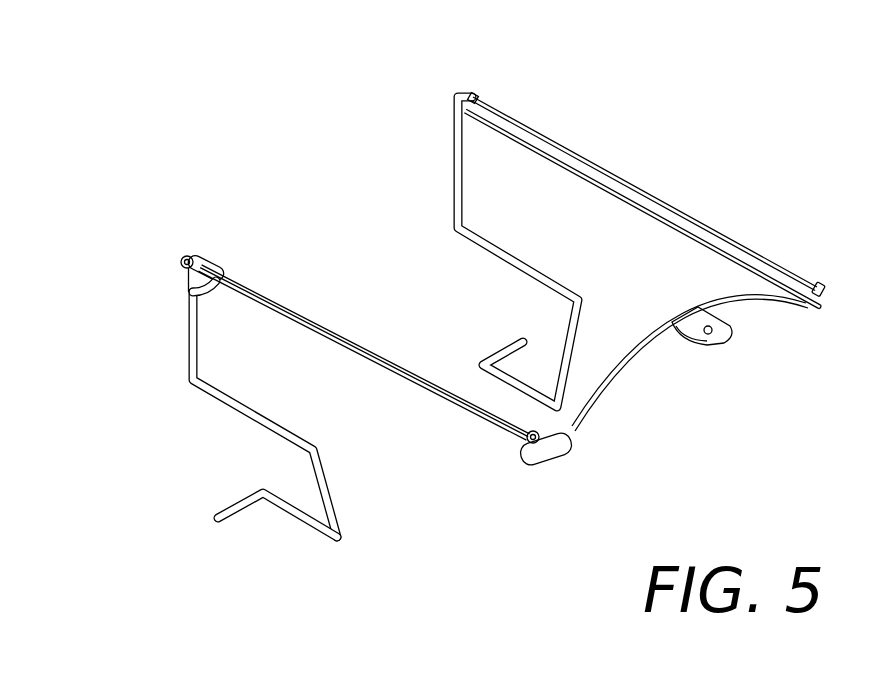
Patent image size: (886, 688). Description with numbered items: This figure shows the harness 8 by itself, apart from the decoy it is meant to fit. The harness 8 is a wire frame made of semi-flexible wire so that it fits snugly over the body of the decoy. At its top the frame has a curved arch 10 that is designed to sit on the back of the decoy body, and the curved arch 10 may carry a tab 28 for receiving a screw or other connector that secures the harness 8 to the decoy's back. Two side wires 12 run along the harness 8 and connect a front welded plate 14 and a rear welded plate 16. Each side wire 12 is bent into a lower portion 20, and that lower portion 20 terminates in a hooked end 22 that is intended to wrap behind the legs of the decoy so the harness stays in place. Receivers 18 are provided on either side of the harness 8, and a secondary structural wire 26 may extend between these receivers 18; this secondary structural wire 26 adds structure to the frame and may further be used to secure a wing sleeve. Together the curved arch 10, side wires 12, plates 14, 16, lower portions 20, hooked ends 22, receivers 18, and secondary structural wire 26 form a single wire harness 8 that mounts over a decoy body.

The harness 8 is at (751, 110).
The curved arch 10 is at (680, 300).
The side wires 12 is at (647, 212).
The front welded plate 14 is at (823, 303).
The rear welded plate 16 is at (459, 134).
The receivers 18 is at (184, 255).
The lower portion 20 is at (222, 405).
The hooked end 22 is at (250, 494).
The secondary structural wire 26 is at (622, 177).
The tab 28 is at (728, 327).